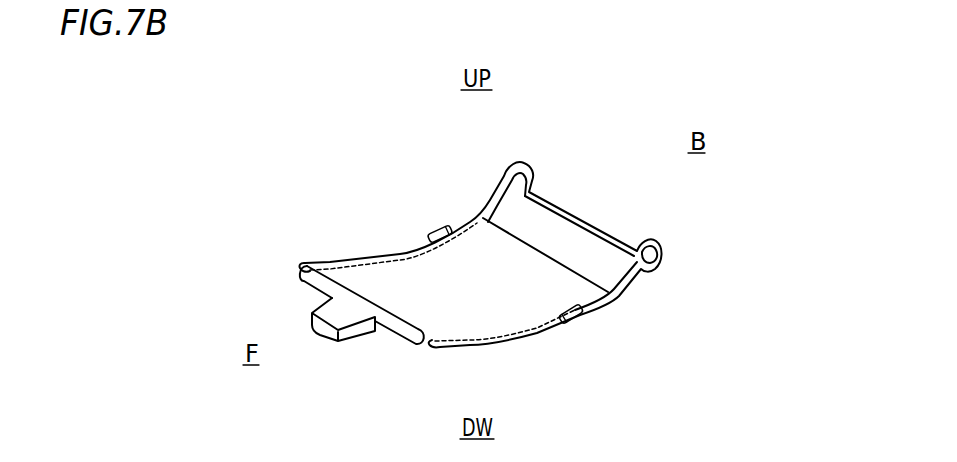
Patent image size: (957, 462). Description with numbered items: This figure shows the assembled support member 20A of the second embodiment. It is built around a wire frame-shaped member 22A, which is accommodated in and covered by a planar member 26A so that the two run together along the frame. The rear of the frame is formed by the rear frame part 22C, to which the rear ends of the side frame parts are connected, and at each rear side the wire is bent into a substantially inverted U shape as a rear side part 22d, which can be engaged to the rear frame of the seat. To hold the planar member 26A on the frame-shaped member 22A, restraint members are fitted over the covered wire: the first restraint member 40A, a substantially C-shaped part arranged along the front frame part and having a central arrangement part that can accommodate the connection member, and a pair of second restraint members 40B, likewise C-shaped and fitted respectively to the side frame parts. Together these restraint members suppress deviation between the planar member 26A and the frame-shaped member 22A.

The support member 20A is at (617, 152).
The frame-shaped member 22A is at (625, 297).
The rear frame part 22C is at (580, 220).
The rear side part 22d is at (502, 170).
The planar member 26A is at (367, 253).
The first restraint member 40A is at (392, 342).
The second restraint member 40B is at (438, 231).